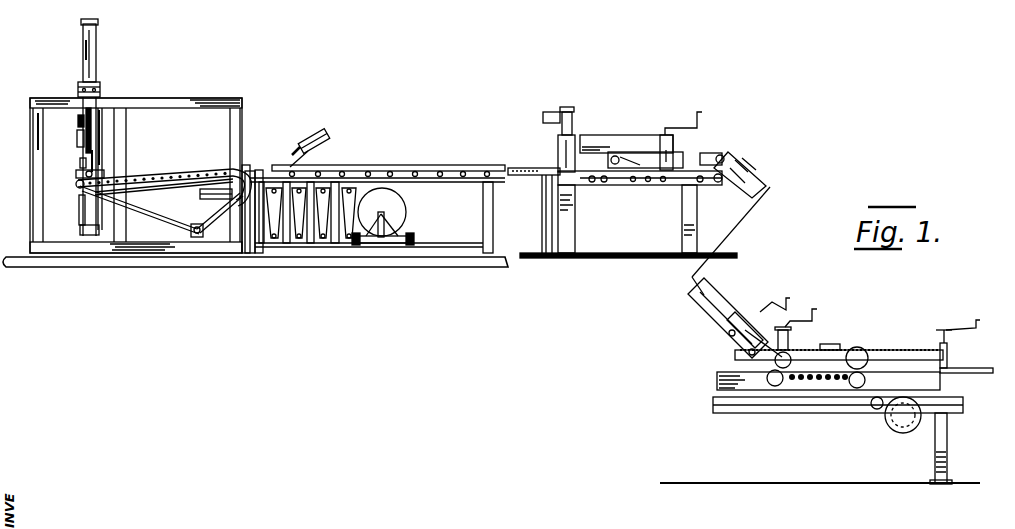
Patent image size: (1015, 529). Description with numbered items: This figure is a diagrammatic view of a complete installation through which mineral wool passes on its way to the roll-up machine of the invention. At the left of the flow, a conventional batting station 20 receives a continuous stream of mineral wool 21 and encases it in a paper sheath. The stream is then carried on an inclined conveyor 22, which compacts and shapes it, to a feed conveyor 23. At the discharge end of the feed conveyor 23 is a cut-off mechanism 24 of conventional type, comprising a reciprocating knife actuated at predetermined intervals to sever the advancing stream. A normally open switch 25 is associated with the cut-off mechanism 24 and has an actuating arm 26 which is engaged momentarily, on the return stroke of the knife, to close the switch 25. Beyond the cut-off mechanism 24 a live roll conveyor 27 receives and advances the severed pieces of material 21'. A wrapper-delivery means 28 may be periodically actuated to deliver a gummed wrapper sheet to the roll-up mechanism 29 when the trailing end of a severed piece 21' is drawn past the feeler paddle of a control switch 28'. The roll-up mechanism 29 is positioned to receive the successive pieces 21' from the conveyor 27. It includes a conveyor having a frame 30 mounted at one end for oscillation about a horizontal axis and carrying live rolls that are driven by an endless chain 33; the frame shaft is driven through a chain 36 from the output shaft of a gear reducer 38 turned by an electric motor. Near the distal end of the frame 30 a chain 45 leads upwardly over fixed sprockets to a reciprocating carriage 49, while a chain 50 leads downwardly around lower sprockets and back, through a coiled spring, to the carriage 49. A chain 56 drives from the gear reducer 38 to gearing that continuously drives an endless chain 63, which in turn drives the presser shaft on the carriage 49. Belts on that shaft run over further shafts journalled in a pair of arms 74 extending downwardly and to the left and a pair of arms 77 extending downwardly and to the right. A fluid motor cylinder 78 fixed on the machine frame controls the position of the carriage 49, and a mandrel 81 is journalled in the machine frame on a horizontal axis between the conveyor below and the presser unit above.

The batting station 20 is at (953, 322).
The stream of mineral wool 21 is at (966, 388).
The severed piece of material 21' is at (375, 194).
The inclined conveyor 22 is at (736, 292).
The feed conveyor 23 is at (645, 130).
The cut-off mechanism 24 is at (558, 149).
The normally open switch 25 is at (548, 111).
The actuating arm 26 is at (572, 122).
The live roll conveyor 27 is at (502, 165).
The wrapper-delivery means 28 is at (401, 216).
The control switch 28' is at (325, 140).
The roll-up mechanism 29 is at (213, 96).
The conveyor frame 30 is at (185, 174).
The endless chain 33 is at (172, 186).
The chain 36 is at (226, 205).
The gear reducer 38 is at (191, 232).
The chain 45 is at (101, 163).
The carriage 49 is at (78, 120).
The chain 50 is at (79, 210).
The chain 56 is at (152, 211).
The endless chain 63 is at (100, 95).
The arms 74 is at (77, 139).
The arms 77 is at (101, 143).
The cylinder 78 is at (96, 58).
The mandrel 81 is at (74, 165).